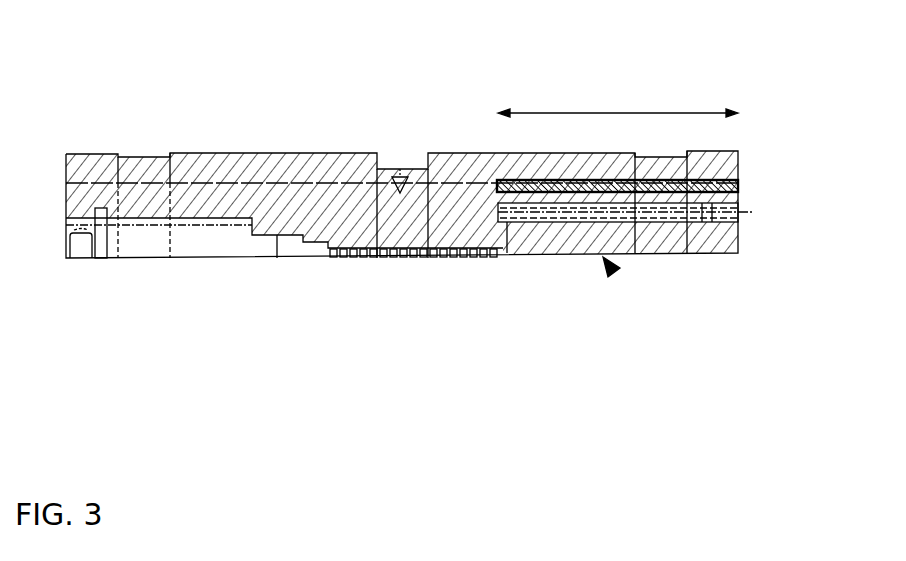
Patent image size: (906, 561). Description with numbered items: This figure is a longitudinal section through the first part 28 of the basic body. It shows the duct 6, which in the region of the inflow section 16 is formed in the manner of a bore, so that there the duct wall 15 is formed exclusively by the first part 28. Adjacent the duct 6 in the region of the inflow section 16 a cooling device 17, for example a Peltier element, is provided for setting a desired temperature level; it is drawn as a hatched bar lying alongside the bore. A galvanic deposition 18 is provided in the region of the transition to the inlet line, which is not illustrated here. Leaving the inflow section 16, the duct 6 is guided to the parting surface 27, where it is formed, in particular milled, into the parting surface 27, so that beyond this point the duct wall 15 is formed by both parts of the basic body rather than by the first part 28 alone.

The duct 6 is at (442, 256).
The duct wall 15 is at (367, 257).
The inflow section 16 is at (612, 113).
The cooling device 17 is at (740, 184).
The galvanic deposition 18 is at (740, 253).
The parting surface 27 is at (615, 277).
The first part 28 is at (345, 166).